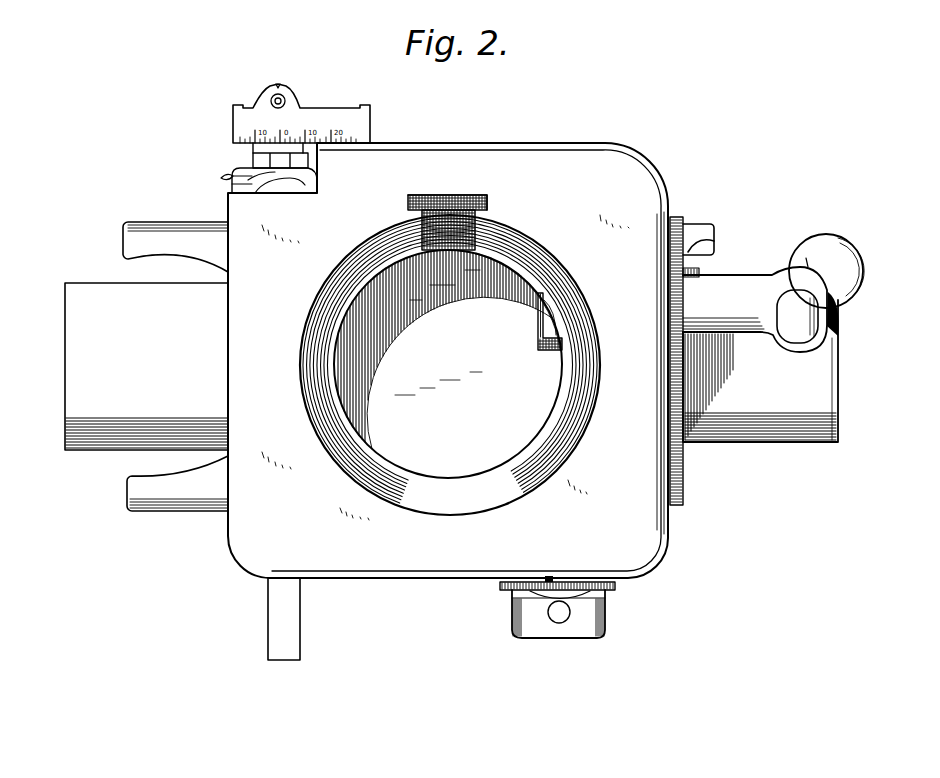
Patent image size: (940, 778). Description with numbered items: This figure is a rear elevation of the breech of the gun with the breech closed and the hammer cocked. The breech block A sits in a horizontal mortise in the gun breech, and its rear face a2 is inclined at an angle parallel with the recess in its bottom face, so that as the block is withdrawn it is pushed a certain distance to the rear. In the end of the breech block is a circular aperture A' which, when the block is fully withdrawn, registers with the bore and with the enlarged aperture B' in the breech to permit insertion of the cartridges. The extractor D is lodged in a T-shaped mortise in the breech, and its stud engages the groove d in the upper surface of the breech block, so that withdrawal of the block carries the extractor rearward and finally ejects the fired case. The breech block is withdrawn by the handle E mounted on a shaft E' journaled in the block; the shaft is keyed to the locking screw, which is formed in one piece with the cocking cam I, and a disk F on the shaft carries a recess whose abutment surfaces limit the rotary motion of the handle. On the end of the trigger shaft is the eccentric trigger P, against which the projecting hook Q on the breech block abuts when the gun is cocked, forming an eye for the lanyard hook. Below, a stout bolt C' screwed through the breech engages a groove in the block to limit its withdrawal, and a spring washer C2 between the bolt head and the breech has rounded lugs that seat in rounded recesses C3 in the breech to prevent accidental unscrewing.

The breech block A is at (448, 364).
The circular aperture A' is at (146, 366).
The rear face of the breech block a2 is at (504, 300).
The enlarged aperture in the breech B' is at (448, 360).
The extractor D is at (446, 196).
The groove d is at (490, 208).
The cocking cam I is at (548, 352).
The trigger P is at (700, 228).
The projecting hook Q is at (718, 244).
The disk F is at (700, 274).
The shaft E' is at (761, 354).
The handle E is at (846, 271).
The bolt C' is at (558, 628).
The spring washer C2 is at (579, 569).
The rounded recesses C3 is at (535, 562).